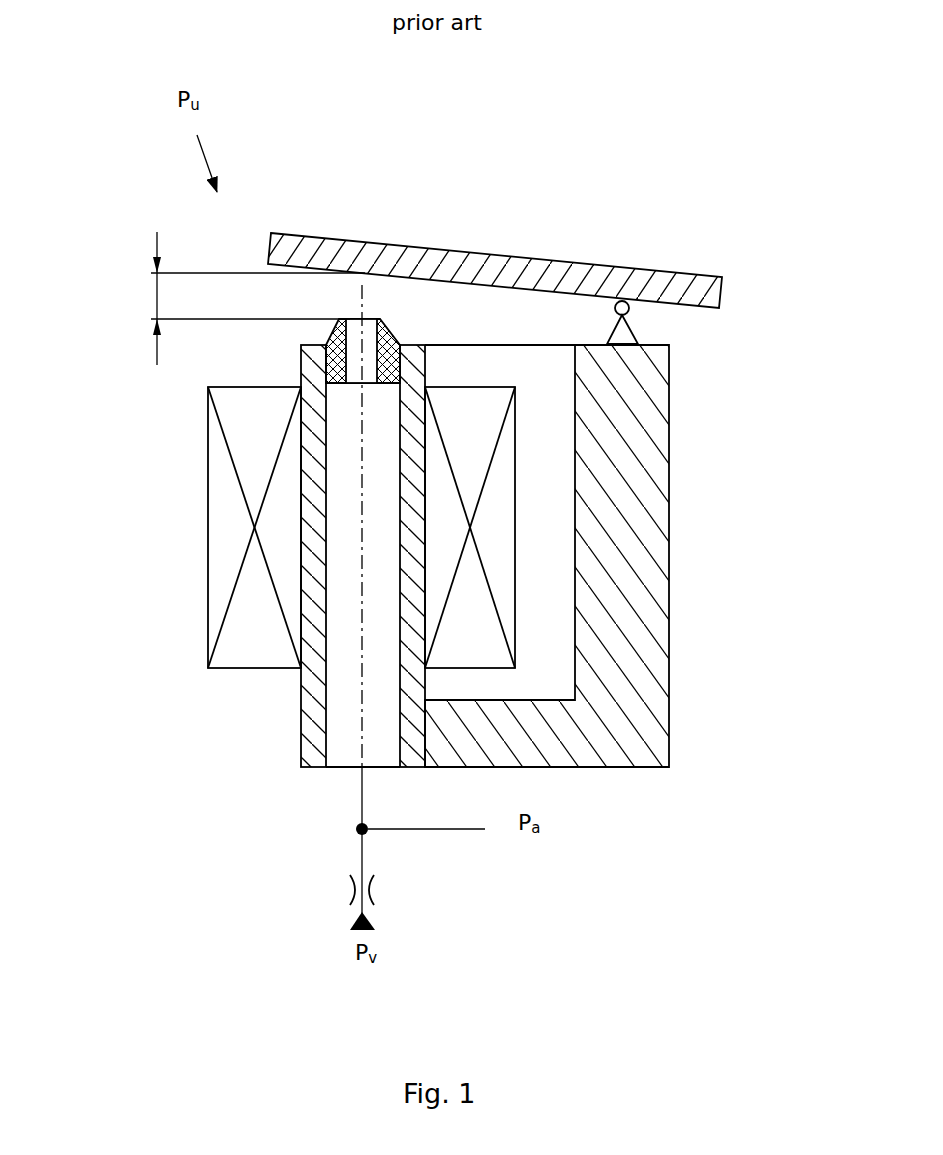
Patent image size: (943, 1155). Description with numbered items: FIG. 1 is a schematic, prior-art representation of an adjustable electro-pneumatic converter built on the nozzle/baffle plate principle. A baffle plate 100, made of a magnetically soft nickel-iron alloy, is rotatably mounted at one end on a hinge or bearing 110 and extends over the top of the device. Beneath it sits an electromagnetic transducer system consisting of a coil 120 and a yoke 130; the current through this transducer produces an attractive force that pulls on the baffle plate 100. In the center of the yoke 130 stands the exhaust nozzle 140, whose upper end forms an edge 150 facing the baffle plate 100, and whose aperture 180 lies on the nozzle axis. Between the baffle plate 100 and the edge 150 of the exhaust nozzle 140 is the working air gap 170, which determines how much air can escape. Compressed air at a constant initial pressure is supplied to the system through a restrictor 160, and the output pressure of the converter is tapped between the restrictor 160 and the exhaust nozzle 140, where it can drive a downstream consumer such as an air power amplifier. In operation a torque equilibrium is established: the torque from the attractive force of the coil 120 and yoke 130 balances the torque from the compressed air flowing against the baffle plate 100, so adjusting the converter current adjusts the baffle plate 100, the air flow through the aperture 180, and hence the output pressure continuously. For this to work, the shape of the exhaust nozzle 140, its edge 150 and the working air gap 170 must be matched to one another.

The baffle plate 100 is at (510, 270).
The hinge or bearing 110 is at (668, 324).
The coil 120 is at (497, 506).
The yoke 130 is at (622, 645).
The exhaust nozzle 140 is at (337, 367).
The edge of exhaust nozzle 150 is at (350, 319).
The restrictor 160 is at (370, 890).
The working air gap 170 is at (148, 292).
The aperture of exhaust nozzle 180 is at (368, 313).